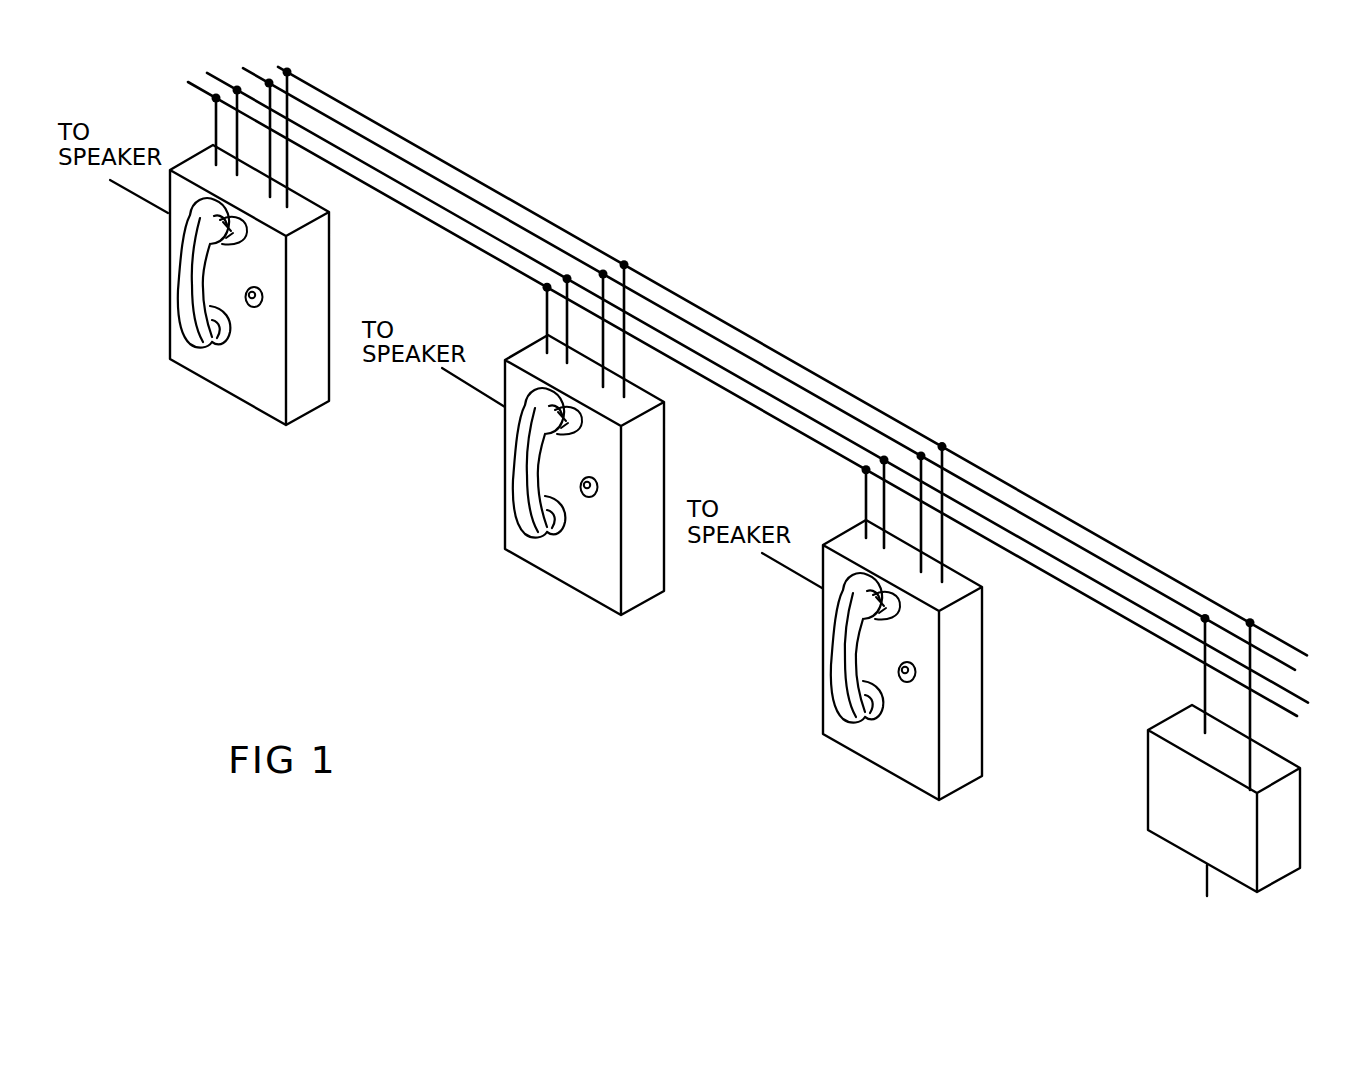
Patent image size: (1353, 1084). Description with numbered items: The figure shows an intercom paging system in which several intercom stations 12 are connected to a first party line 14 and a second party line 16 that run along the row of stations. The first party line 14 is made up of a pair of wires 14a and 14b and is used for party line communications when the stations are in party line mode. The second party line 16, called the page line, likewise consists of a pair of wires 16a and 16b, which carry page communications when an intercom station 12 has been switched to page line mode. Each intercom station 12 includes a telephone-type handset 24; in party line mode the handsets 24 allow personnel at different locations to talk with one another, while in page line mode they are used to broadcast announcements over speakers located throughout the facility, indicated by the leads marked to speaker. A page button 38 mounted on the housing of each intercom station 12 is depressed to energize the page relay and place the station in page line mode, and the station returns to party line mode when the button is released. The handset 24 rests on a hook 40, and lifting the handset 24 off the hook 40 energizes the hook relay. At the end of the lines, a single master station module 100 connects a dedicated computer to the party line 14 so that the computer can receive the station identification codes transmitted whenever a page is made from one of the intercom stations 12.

The intercom station 12 is at (200, 378).
The first party line 14 is at (717, 421).
The wire 14a is at (522, 205).
The wire 14b is at (567, 250).
The second party line 16 is at (730, 394).
The wire 16a is at (1083, 572).
The wire 16b is at (1128, 618).
The handset 24 is at (190, 308).
The page button 38 is at (253, 306).
The hook 40 is at (232, 238).
The master station module 100 is at (1188, 825).